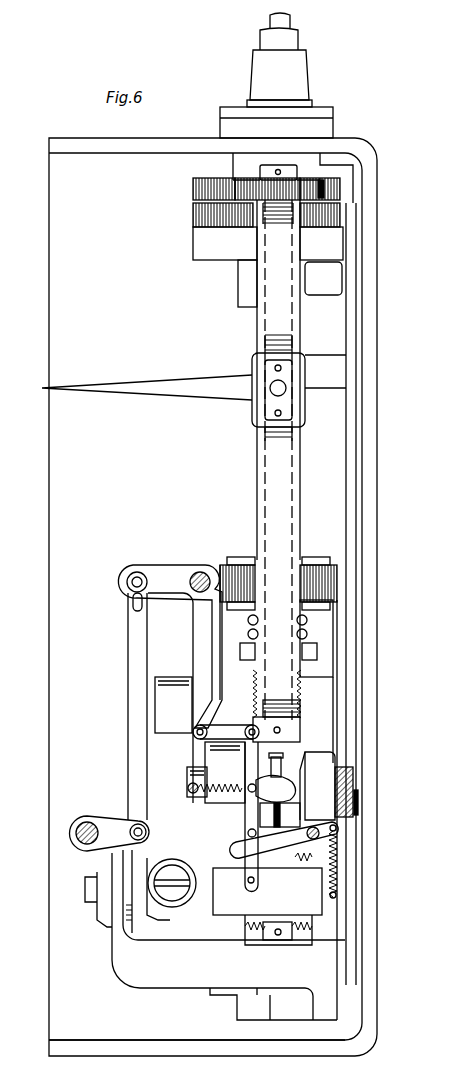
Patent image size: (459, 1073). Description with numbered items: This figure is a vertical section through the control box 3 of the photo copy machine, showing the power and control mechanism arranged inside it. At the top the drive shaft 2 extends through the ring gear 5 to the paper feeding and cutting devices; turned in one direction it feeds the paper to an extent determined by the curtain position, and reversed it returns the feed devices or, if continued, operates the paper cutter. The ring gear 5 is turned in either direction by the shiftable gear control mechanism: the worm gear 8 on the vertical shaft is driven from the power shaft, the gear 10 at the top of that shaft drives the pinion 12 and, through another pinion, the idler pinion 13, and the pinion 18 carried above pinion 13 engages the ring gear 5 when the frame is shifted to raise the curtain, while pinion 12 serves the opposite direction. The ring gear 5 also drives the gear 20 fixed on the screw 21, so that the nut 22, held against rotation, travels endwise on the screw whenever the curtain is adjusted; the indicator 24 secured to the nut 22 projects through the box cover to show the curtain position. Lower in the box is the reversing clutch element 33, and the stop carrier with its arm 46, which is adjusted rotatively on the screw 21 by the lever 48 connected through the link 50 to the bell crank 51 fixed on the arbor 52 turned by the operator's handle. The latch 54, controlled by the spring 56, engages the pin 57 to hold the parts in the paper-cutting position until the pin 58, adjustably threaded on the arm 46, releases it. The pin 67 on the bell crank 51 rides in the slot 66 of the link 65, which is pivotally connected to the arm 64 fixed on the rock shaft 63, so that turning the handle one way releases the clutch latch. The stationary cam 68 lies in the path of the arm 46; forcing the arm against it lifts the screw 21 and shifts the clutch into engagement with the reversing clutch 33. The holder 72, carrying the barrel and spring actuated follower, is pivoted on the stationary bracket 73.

The drive shaft 2 is at (290, 21).
The control box 3 is at (108, 147).
The ring gear 5 is at (330, 186).
The worm gear 8 is at (248, 580).
The gear 10 is at (303, 224).
The pinion 12 is at (330, 218).
The idler pinion 13 is at (212, 215).
The pinion 18 is at (210, 192).
The gear 20 is at (268, 190).
The screw 21 is at (265, 344).
The nut 22 is at (305, 410).
The indicator 24 is at (163, 387).
The clutch element 33 is at (245, 933).
The arm 46 is at (283, 788).
The lever 48 is at (248, 809).
The link 50 is at (223, 733).
The bell crank 51 is at (208, 632).
The arbor 52 is at (198, 574).
The latch 54 is at (286, 848).
The spring 56 is at (330, 860).
The pin 57 is at (250, 830).
The pin 58 is at (280, 835).
The rock shaft 63 is at (75, 834).
The arm 64 is at (100, 827).
The link 65 is at (128, 661).
The slot 66 is at (133, 606).
The pin 67 is at (138, 576).
The stationary cam 68 is at (303, 812).
The holder 72 is at (234, 895).
The stationary bracket 73 is at (118, 868).